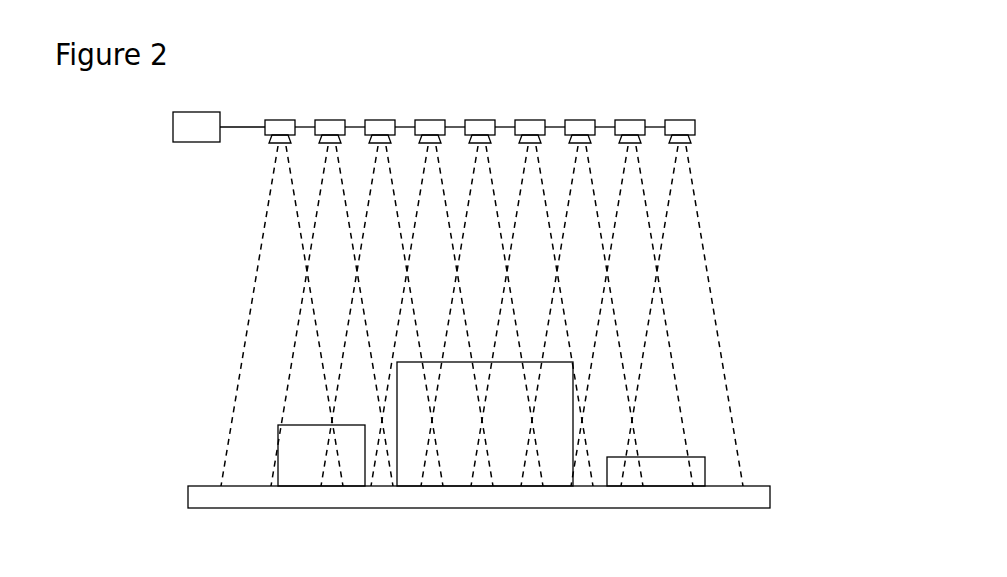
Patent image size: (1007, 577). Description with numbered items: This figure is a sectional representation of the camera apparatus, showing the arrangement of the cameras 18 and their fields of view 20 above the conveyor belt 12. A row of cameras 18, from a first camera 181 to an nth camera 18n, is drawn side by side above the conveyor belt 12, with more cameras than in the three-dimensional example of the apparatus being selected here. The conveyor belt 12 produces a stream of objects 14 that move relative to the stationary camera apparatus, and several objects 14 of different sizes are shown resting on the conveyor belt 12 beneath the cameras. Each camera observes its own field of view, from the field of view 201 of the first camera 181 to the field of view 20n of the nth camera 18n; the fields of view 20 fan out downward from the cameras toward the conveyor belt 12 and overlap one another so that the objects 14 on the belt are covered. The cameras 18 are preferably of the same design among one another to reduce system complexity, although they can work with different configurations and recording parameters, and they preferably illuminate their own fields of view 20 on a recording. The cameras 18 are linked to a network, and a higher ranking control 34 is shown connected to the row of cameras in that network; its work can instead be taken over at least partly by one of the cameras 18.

The conveyor belt 12 is at (755, 495).
The objects 14 is at (290, 448).
The cameras 18 is at (523, 118).
The first camera 181 is at (285, 128).
The nth camera 18n is at (690, 128).
The fields of view 20 is at (480, 316).
The field of view of the first camera 201 is at (260, 253).
The field of view of the nth camera 20n is at (705, 267).
The higher ranking control 34 is at (192, 130).